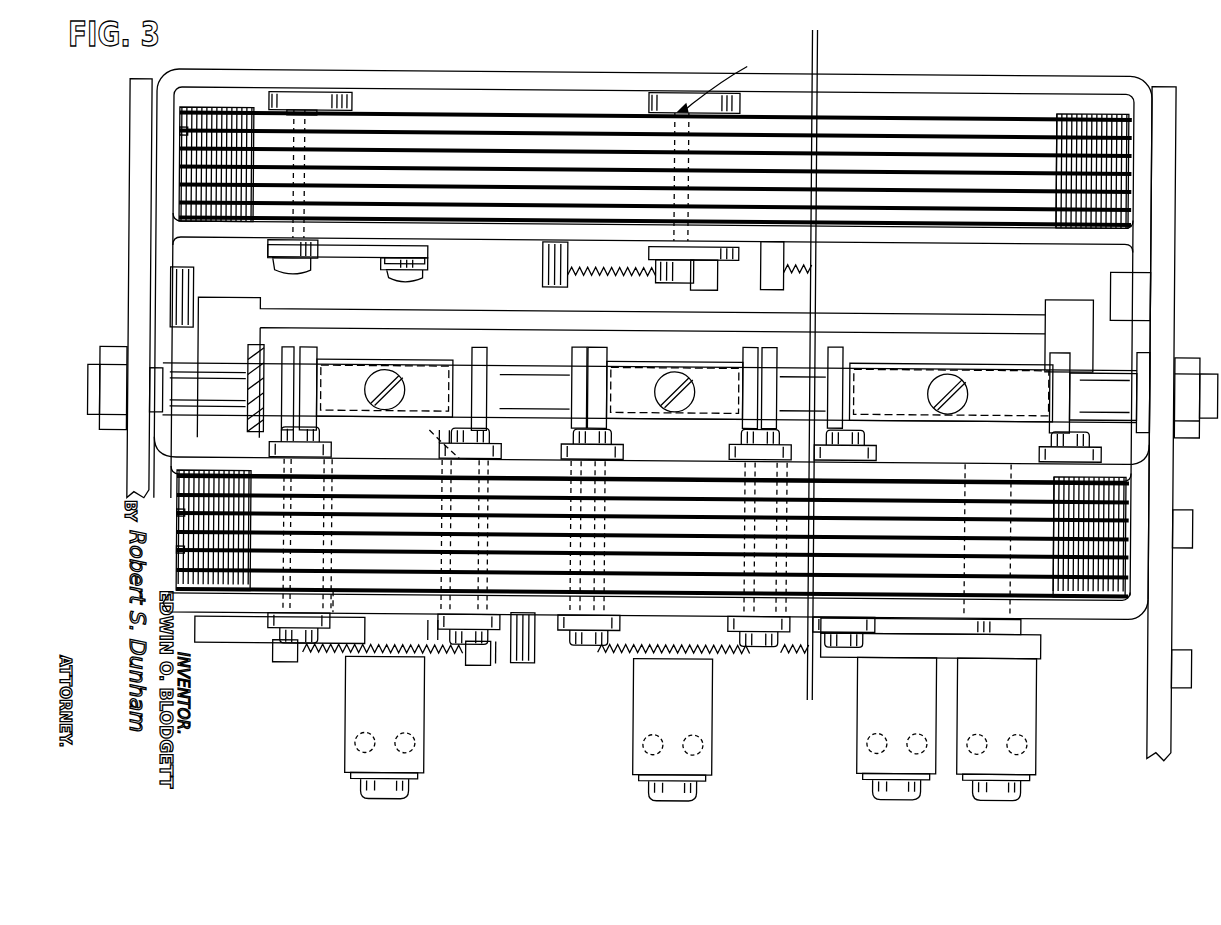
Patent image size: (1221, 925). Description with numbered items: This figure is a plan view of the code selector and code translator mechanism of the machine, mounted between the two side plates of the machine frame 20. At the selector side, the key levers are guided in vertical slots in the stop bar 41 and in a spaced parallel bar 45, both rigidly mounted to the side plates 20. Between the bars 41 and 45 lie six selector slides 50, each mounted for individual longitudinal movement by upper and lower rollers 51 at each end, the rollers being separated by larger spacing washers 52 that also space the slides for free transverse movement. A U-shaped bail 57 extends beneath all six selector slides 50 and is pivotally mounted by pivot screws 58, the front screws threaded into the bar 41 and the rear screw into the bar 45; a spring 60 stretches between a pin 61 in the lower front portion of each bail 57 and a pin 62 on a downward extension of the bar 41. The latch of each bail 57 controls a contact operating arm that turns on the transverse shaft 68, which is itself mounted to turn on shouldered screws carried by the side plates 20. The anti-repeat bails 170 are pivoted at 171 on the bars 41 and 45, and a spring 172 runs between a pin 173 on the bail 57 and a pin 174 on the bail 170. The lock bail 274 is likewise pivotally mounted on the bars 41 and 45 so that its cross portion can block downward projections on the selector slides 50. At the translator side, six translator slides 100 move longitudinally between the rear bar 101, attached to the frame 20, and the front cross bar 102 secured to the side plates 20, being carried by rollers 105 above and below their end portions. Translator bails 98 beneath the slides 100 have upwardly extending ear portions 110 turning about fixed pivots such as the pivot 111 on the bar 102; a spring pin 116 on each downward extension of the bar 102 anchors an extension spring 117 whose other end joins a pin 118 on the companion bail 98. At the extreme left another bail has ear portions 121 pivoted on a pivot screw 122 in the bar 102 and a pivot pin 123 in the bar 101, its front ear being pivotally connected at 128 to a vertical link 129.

The side plate 20 is at (120, 169).
The stop bar 41 is at (1082, 619).
The parallel bar 45 is at (222, 442).
The selector slide 50 is at (368, 493).
The roller 51 is at (178, 545).
The spacing washer 52 is at (178, 516).
The bail 57 is at (336, 603).
The pivot screw 58 is at (325, 431).
The spring 60 is at (497, 661).
The pin 61 is at (265, 658).
The pin 62 is at (530, 658).
The transverse shaft 68 is at (220, 372).
The translator bail 98 is at (723, 81).
The translator slide 100 is at (410, 146).
The rear bar 101 is at (510, 46).
The front cross bar 102 is at (458, 237).
The roller 105 is at (178, 201).
The ear portion 110 is at (647, 101).
The pivot 111 is at (674, 279).
The spring pin 116 is at (542, 282).
The extension spring 117 is at (592, 277).
The pin 118 is at (715, 279).
The ear portion 121 is at (335, 256).
The pivot screw 122 is at (290, 269).
The pivot pin 123 is at (295, 91).
The pivotal connection 128 is at (433, 276).
The vertical link 129 is at (384, 260).
The anti-repeat bail 170 is at (430, 456).
The pivot 171 is at (440, 434).
The spring 172 is at (372, 661).
The pin 173 is at (300, 659).
The pin 174 is at (475, 658).
The lock bail 274 is at (980, 622).